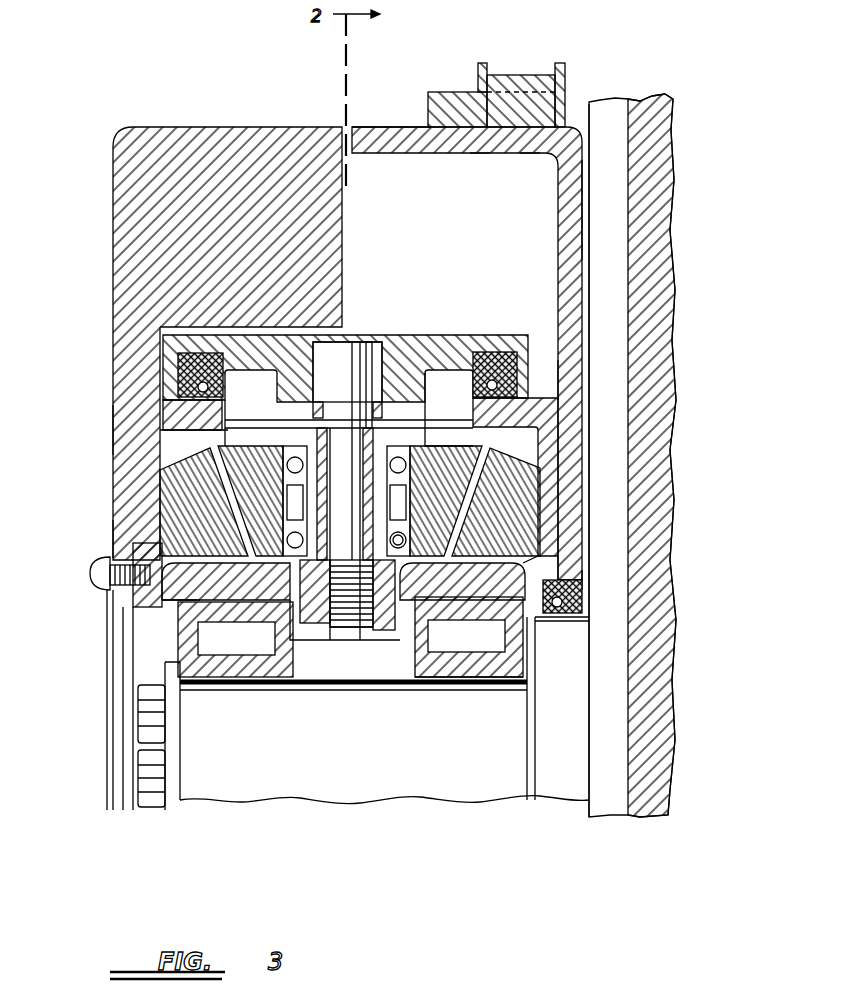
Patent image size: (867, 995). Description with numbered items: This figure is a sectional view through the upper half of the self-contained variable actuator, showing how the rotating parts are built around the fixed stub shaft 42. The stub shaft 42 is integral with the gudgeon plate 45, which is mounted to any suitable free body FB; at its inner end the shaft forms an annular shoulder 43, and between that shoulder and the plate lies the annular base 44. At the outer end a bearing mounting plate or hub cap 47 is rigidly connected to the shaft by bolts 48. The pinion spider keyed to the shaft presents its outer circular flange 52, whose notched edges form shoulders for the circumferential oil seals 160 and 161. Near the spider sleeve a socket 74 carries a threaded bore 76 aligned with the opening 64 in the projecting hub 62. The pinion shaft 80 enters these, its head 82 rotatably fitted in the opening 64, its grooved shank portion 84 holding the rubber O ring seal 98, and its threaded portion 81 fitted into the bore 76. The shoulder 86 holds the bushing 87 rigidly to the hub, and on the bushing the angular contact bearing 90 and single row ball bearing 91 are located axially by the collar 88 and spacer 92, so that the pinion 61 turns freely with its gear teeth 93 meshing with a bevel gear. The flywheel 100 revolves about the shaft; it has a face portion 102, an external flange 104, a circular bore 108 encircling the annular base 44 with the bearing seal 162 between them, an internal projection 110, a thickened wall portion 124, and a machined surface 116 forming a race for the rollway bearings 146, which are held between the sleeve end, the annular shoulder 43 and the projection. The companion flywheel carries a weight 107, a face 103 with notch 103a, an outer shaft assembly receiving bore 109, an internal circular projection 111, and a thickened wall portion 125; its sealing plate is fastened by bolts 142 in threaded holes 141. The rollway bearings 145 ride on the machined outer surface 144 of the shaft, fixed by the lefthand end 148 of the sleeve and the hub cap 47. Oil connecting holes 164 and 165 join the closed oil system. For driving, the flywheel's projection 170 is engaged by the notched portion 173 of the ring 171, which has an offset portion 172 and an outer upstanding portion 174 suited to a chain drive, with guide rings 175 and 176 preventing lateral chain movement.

The stub shaft 42 is at (384, 710).
The annular shoulder 43 is at (532, 674).
The annular base 44 is at (649, 455).
The gudgeon plate 45 is at (620, 652).
The bearing mounting plate or hub cap 47 is at (142, 710).
The bolts 48 is at (142, 757).
The outer circular flange 52 is at (420, 340).
The pinion 61 is at (238, 458).
The projecting hub 62 is at (406, 412).
The opening 64 is at (378, 369).
The socket 74 is at (345, 640).
The bore 76 is at (362, 632).
The pinion shaft 80 is at (349, 542).
The threaded portion 81 is at (372, 630).
The head 82 is at (360, 345).
The shank portion 84 is at (343, 412).
The shoulder 86 is at (316, 420).
The bushing 87 is at (300, 492).
The collar 88 is at (396, 430).
The angular contact bearing 90 is at (413, 456).
The single row ball bearing 91 is at (402, 522).
The spacer 92 is at (397, 502).
The gear teeth 93 is at (496, 463).
The O ring seal 98 is at (385, 402).
The flywheel 100 is at (542, 340).
The face portion 102 is at (571, 190).
The face 103 is at (118, 468).
The notch 103a is at (136, 558).
The external flange 104 is at (358, 140).
The weight 107 is at (122, 150).
The circular bore 108 is at (557, 578).
The outer shaft assembly receiving bore 109 is at (166, 613).
The internal projection 110 is at (560, 382).
The internal circular projection 111 is at (176, 438).
The machined surface 116 is at (490, 598).
The thickened wall portion 124 is at (576, 472).
The thickened wall portion 125 is at (124, 432).
The threaded holes 141 is at (100, 568).
The bolts 142 is at (136, 586).
The outer surface 144 is at (226, 673).
The rollway bearings 145 is at (240, 628).
The rollway bearings 146 is at (503, 674).
The lefthand end 148 is at (298, 672).
The circumferential oil seal 160 is at (495, 355).
The circumferential oil seal 161 is at (185, 372).
The annular circumferential bearing seal 162 is at (549, 596).
The oil connecting hole 164 is at (524, 567).
The oil connecting hole 165 is at (172, 606).
The projection 170 is at (499, 79).
The ring 171 is at (452, 90).
The offset portion 172 is at (531, 140).
The notched portion 173 is at (479, 150).
The outer upstanding portion 174 is at (512, 90).
The guide ring 175 is at (481, 72).
The guide ring 176 is at (567, 100).
The free body FB is at (586, 583).